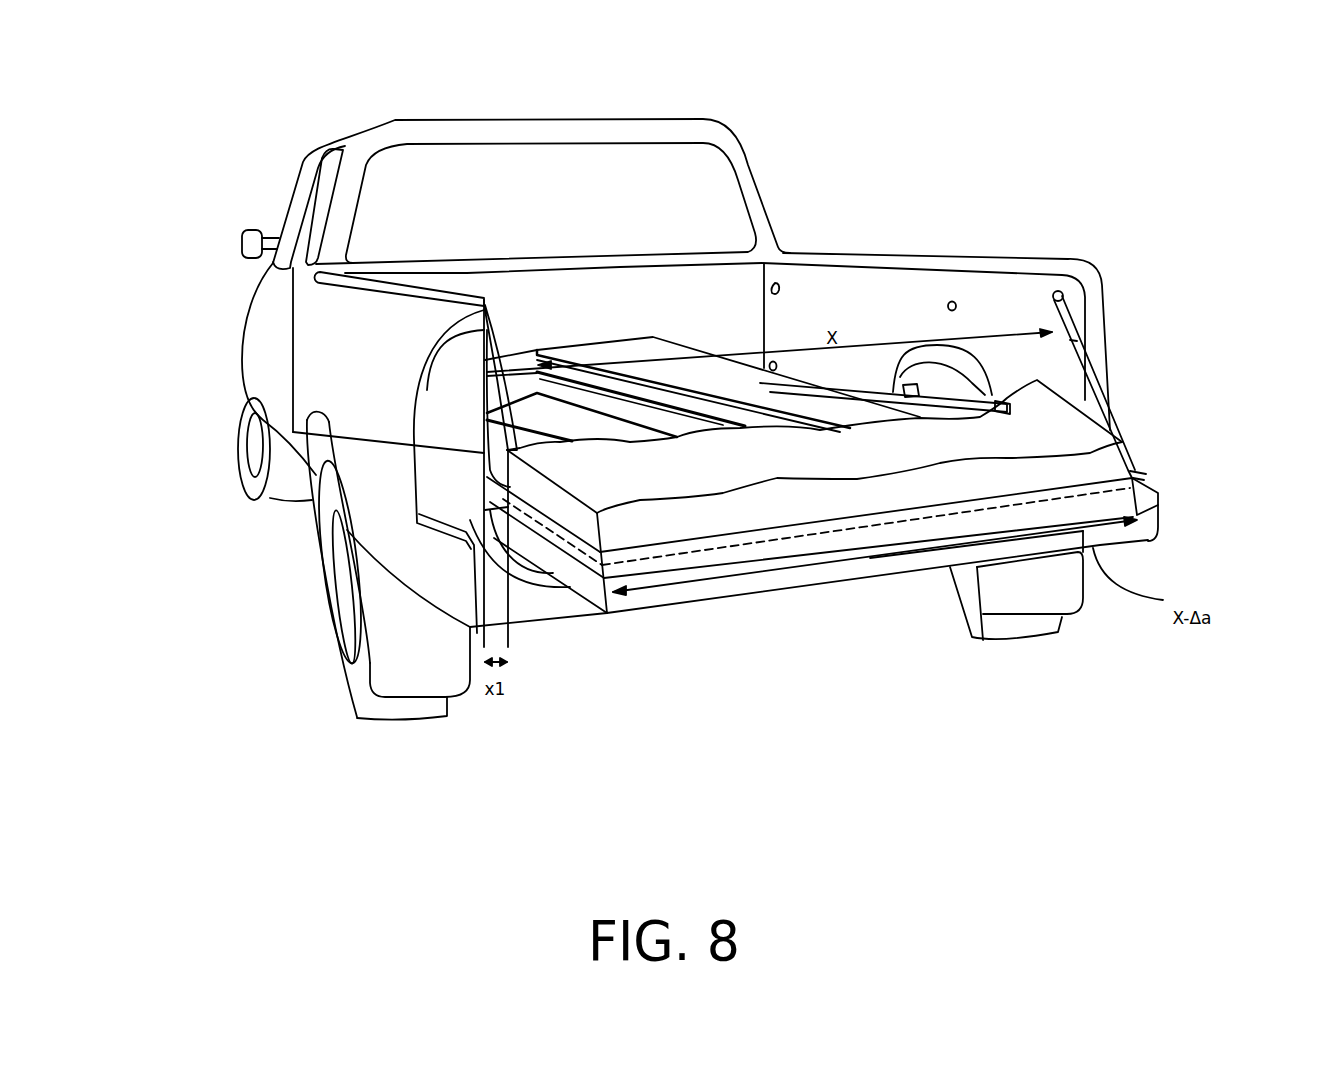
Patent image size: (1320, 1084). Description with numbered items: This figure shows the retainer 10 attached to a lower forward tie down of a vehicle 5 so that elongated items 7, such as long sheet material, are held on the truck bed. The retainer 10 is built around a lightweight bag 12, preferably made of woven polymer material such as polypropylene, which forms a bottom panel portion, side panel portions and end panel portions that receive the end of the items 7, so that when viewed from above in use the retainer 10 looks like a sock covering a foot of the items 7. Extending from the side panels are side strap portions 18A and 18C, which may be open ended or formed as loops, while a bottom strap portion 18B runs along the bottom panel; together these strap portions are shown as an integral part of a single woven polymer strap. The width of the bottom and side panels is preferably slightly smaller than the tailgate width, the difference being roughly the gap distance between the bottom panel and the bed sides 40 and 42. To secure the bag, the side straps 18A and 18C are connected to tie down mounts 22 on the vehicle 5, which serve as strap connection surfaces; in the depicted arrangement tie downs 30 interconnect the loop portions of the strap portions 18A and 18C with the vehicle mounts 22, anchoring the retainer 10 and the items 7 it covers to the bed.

The vehicle 5 is at (423, 119).
The elongated items 7 is at (623, 352).
The retainer 10 is at (1140, 417).
The lightweight bag 12 is at (585, 500).
The side strap portion 18A is at (997, 397).
The bottom strap portion 18B is at (780, 540).
The side strap portion 18C is at (490, 450).
The tie down mount 22 is at (773, 363).
The tie down 30 is at (860, 377).
The side 40 is at (487, 312).
The side 42 is at (992, 297).